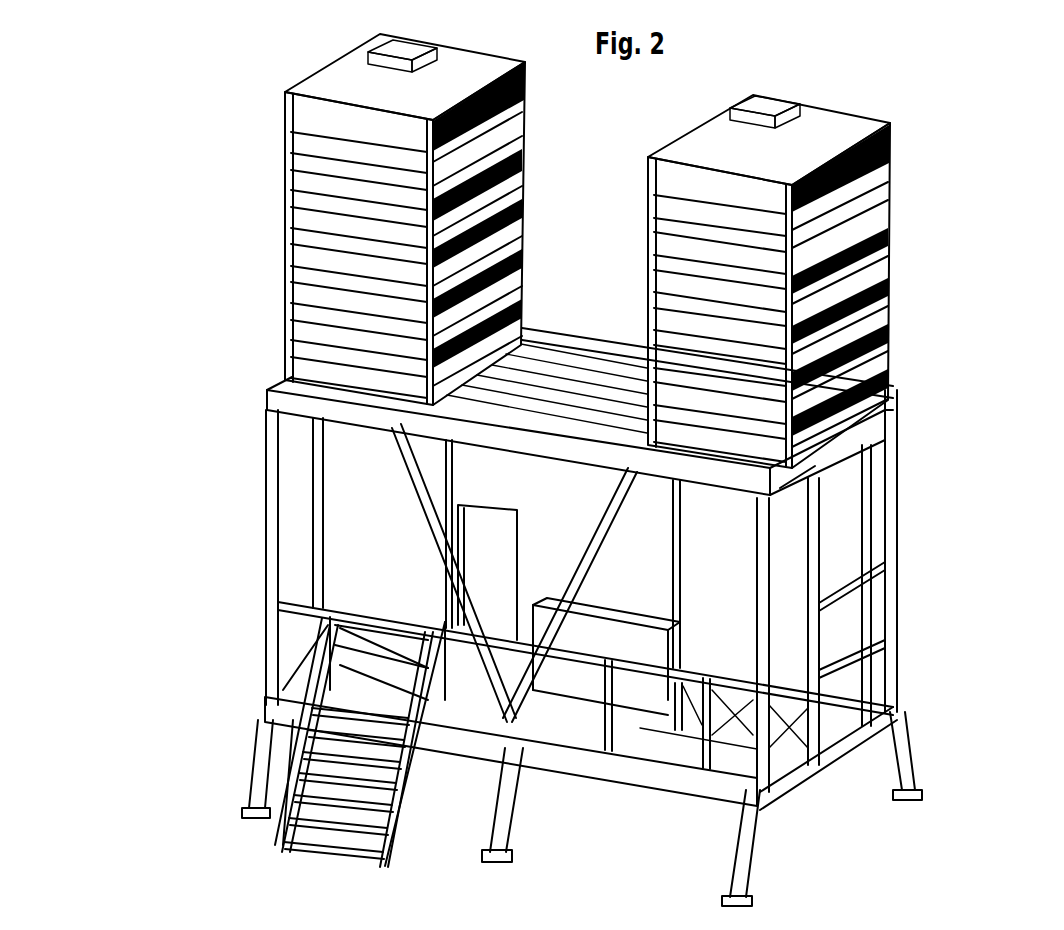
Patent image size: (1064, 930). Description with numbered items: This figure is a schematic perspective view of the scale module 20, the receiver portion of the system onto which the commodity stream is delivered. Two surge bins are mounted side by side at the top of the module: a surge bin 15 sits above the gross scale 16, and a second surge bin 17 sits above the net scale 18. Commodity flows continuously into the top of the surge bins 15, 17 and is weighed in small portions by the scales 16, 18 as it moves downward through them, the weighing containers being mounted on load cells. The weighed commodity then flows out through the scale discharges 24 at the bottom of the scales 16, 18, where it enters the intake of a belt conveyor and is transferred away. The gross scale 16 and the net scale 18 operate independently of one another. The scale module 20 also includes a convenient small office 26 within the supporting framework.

The surge bin 15 is at (805, 281).
The gross scale 16 is at (876, 591).
The surge bin 17 is at (437, 219).
The net scale 18 is at (313, 480).
The scale module 20 is at (665, 411).
The scale discharge 24 is at (805, 770).
The small office 26 is at (525, 558).